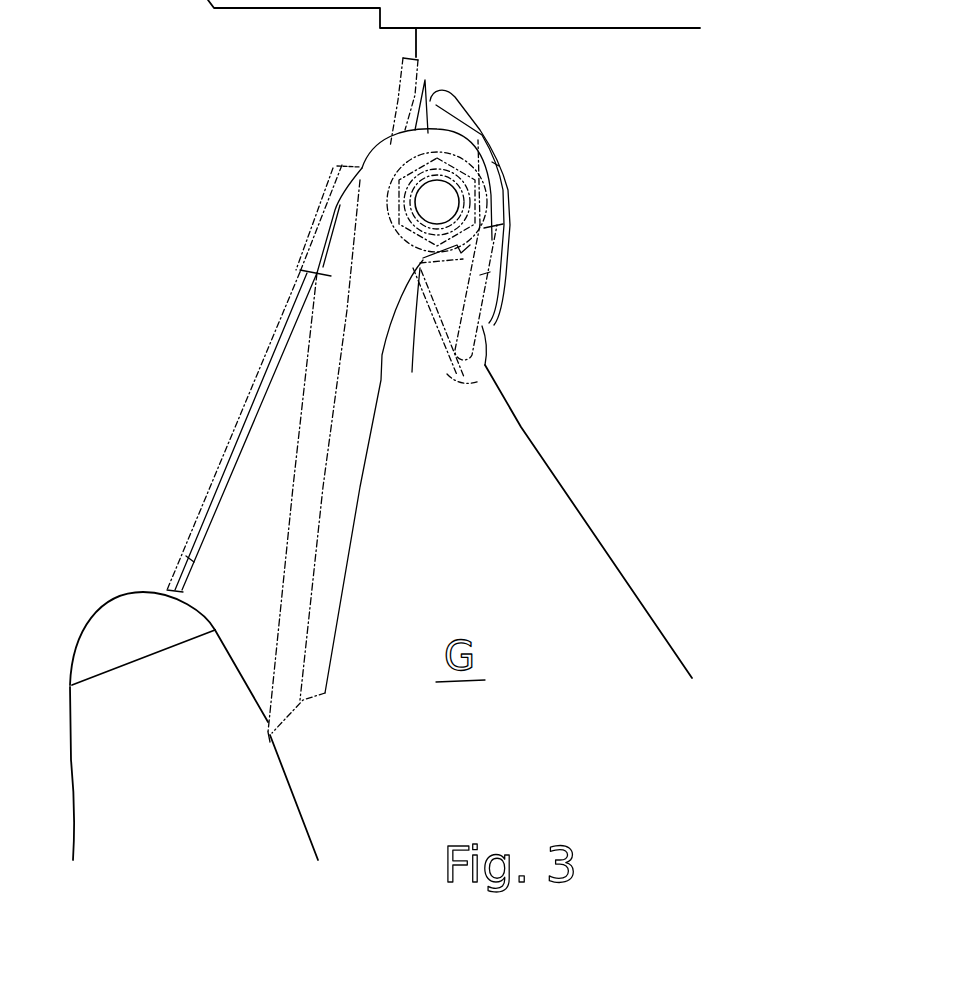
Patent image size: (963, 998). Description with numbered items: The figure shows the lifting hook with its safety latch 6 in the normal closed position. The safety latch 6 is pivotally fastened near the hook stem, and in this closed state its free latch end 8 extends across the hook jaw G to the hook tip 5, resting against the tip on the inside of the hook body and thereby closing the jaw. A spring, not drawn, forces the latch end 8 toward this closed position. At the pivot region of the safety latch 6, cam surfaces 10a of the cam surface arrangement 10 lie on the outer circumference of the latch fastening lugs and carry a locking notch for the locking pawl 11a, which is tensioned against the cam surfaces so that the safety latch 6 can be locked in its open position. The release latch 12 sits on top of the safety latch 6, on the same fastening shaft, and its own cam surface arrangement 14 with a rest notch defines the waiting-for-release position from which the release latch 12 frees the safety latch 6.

The hook tip 5 is at (123, 620).
The safety latch 6 is at (357, 511).
The latch end 8 is at (306, 704).
The cam surface arrangement 10 is at (498, 207).
The cam surfaces 10a is at (455, 246).
The locking pawl 11a is at (490, 248).
The release latch 12 is at (250, 392).
The cam surface arrangement 14 is at (491, 146).